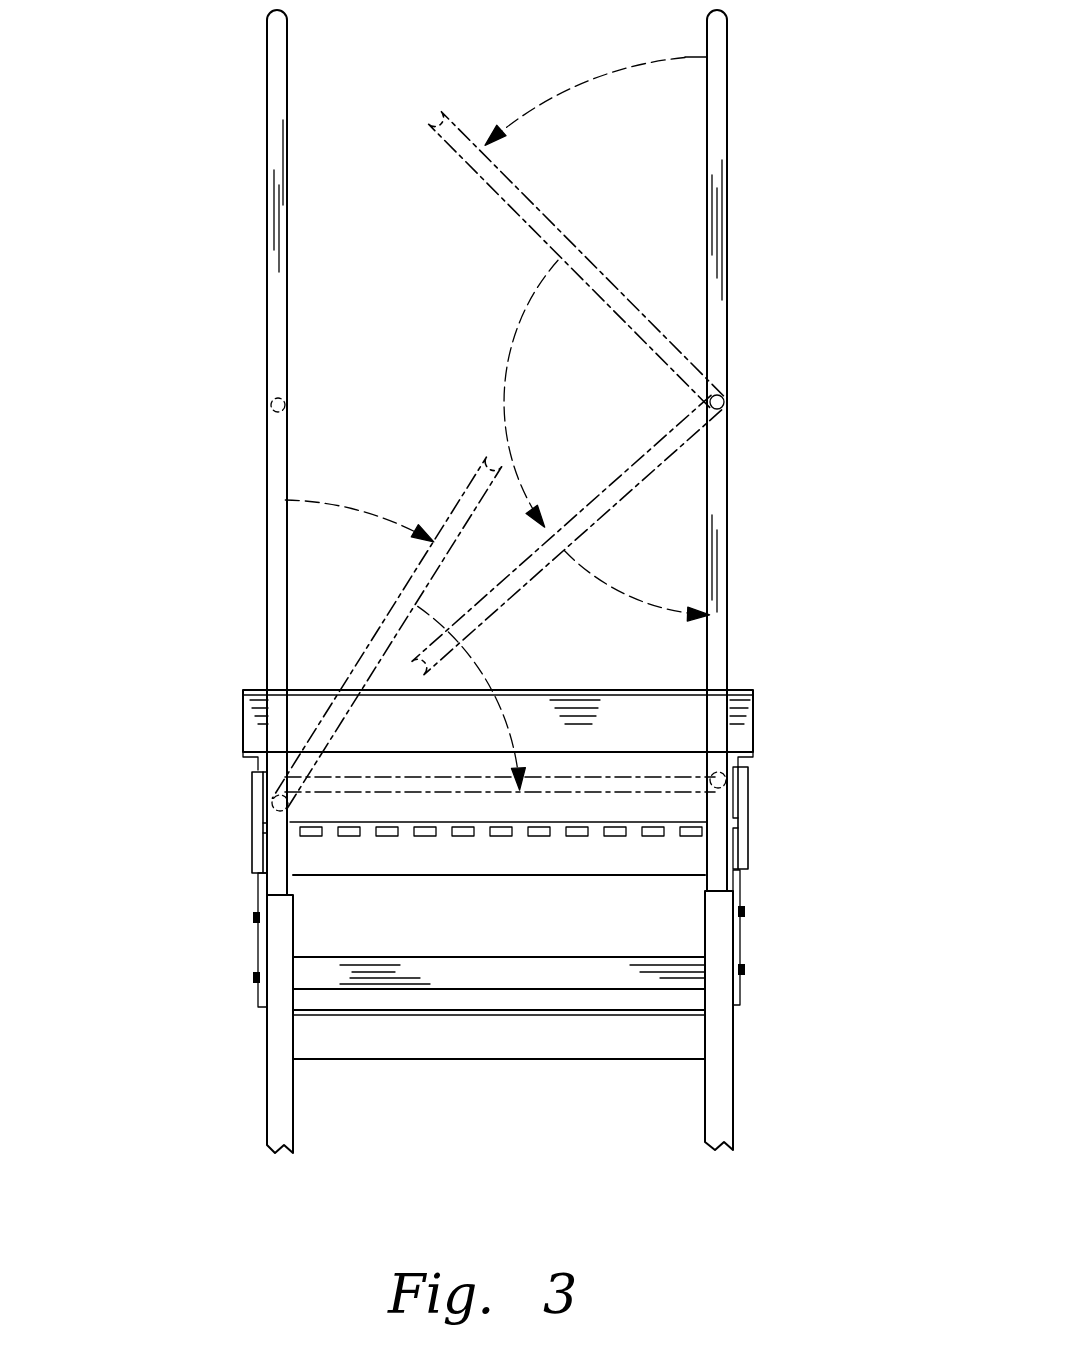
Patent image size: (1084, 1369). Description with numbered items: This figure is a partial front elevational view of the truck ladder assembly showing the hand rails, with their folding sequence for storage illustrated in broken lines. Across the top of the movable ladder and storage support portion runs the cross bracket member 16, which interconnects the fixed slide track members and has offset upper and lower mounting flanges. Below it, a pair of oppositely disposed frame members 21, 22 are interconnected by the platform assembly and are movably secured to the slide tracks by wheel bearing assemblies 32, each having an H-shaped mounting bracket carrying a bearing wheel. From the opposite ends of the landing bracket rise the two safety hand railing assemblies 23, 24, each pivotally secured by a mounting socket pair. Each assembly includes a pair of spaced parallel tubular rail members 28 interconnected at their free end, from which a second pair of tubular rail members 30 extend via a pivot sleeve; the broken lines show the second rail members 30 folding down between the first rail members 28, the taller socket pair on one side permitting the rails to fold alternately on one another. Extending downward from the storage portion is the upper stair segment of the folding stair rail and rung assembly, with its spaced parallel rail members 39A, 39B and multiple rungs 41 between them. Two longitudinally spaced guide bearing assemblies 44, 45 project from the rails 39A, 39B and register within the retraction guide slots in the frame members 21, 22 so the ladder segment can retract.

The cross bracket member 16 is at (253, 722).
The frame member 21 is at (258, 880).
The frame member 22 is at (745, 880).
The safety hand railing assembly 23 is at (268, 165).
The safety hand railing assembly 24 is at (728, 125).
The tubular rail member 28 is at (276, 577).
The second tubular rail member 30 is at (276, 318).
The wheel bearing assembly 32 is at (250, 825).
The rail member 39A is at (290, 1100).
The rail member 39B is at (722, 1080).
The rung 41 is at (500, 1040).
The guide bearing assembly 44 is at (253, 917).
The guide bearing assembly 45 is at (253, 977).